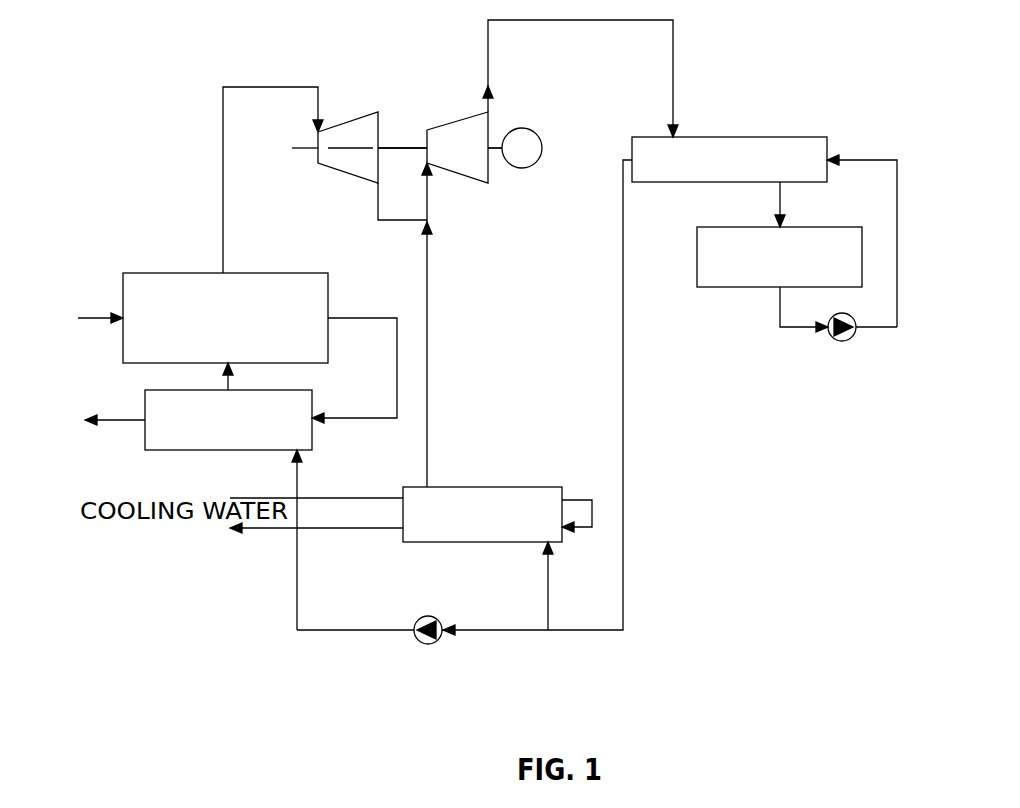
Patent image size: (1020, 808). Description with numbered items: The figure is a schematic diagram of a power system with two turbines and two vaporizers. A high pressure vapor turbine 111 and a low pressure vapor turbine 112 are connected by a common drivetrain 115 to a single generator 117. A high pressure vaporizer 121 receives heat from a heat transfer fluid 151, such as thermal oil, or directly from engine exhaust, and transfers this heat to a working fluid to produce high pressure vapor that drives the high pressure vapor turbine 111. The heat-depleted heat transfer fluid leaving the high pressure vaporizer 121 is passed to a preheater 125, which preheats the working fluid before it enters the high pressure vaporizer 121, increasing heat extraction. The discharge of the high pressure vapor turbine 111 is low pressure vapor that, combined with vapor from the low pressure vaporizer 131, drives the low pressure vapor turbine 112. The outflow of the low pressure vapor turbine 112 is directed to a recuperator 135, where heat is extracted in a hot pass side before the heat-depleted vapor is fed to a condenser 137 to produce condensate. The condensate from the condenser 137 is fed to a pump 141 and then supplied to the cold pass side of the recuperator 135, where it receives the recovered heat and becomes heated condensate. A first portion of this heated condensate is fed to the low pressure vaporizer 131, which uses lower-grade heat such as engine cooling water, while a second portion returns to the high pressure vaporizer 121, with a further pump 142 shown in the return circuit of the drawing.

The high pressure vapor turbine 111 is at (362, 117).
The low pressure vapor turbine 112 is at (430, 130).
The common drivetrain 115 is at (383, 148).
The generator 117 is at (524, 129).
The high pressure vaporizer 121 is at (328, 273).
The preheater 125 is at (312, 390).
The low pressure vaporizer 131 is at (548, 487).
The recuperator 135 is at (827, 137).
The condenser 137 is at (853, 212).
The pump 141 is at (843, 341).
The cycle pump 142 is at (428, 645).
The heat transfer fluid 151 is at (95, 305).